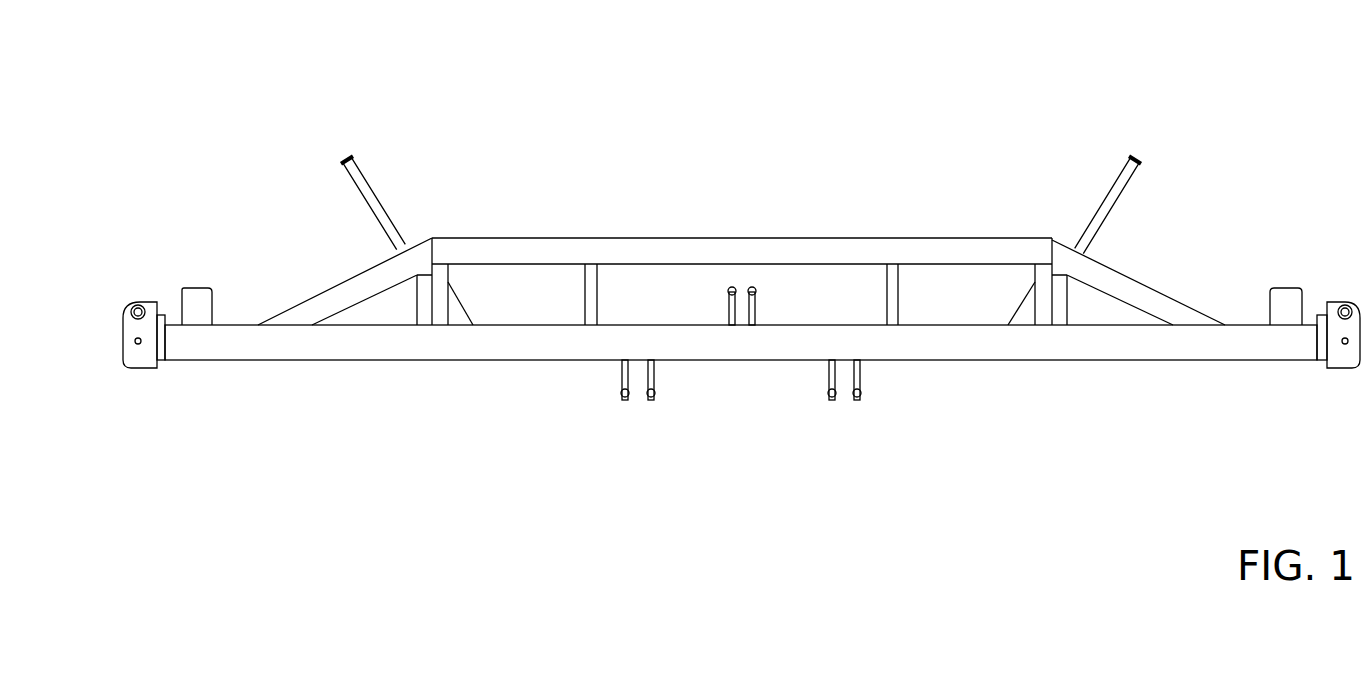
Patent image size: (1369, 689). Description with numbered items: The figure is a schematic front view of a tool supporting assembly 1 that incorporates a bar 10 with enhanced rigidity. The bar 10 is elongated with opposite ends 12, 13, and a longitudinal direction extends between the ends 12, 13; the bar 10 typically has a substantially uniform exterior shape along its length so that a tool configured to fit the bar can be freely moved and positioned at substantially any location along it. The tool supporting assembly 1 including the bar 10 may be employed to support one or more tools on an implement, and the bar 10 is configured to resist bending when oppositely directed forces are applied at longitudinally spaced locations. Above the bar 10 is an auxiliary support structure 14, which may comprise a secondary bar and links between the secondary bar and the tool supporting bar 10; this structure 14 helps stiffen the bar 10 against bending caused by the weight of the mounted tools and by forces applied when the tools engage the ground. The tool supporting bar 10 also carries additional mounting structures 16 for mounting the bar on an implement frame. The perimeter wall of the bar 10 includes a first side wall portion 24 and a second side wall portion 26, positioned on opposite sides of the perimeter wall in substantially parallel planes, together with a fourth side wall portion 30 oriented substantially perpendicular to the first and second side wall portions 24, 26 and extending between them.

The tool supporting assembly 1 is at (1072, 93).
The bar 10 is at (952, 345).
The end 12 is at (1307, 345).
The end 13 is at (186, 345).
The auxiliary support structure 14 is at (615, 238).
The mounting structures 16 is at (656, 390).
The first side wall portion 24 is at (380, 323).
The second side wall portion 26 is at (406, 342).
The fourth side wall portion 30 is at (518, 343).